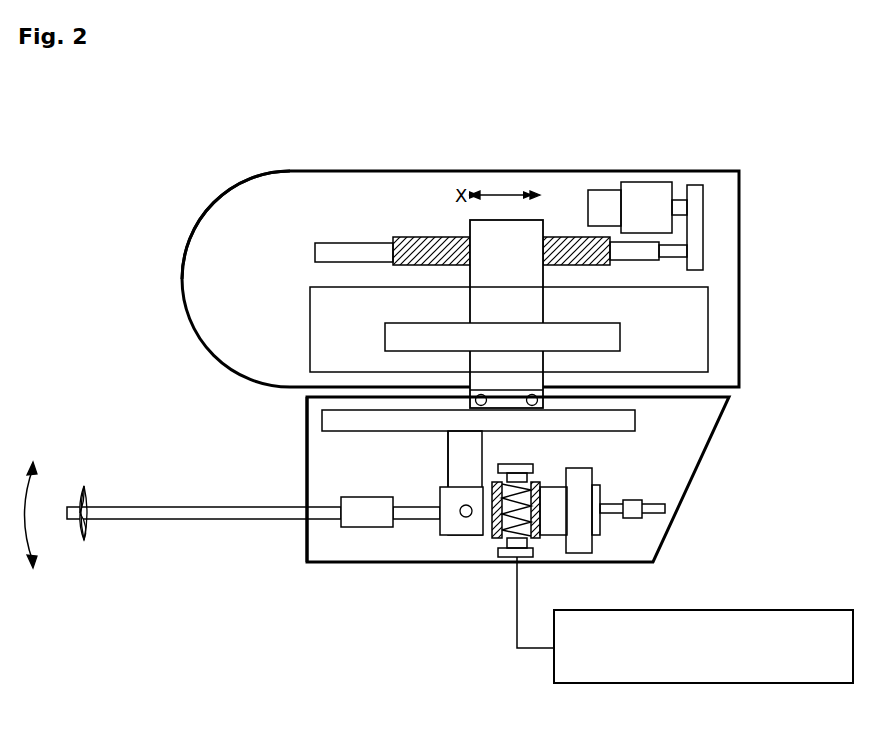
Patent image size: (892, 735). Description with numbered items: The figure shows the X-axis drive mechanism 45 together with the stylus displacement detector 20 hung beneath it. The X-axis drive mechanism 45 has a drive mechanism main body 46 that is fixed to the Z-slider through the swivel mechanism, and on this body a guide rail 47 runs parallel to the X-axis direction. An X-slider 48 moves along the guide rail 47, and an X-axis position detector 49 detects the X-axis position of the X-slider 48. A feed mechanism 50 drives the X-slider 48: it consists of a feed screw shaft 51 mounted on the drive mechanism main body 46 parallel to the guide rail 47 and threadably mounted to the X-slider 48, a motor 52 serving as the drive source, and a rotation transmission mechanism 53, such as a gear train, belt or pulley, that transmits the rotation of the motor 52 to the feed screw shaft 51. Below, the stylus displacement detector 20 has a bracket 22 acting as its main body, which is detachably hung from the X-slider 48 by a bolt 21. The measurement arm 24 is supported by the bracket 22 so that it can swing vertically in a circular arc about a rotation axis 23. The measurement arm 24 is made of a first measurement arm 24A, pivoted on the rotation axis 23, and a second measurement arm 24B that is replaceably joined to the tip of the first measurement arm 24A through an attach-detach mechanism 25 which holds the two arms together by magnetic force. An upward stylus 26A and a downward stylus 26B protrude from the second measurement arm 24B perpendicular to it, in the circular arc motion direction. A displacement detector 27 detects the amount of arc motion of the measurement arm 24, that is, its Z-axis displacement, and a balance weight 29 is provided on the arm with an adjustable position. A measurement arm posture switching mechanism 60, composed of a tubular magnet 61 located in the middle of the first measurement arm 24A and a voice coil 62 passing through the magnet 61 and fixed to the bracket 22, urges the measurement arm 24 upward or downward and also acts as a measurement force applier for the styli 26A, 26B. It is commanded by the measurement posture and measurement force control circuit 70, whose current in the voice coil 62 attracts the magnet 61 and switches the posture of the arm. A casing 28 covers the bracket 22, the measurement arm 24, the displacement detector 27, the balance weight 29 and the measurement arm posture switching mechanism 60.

The stylus displacement detector 20 is at (307, 442).
The bolt 21 is at (532, 406).
The bracket 22 is at (635, 419).
The rotation axis 23 is at (466, 517).
The measurement arm 24 is at (277, 603).
The first measurement arm 24A is at (440, 587).
The second measurement arm 24B is at (250, 520).
The attach-detach mechanism 25 is at (368, 527).
The upward stylus 26A is at (84, 487).
The downward stylus 26B is at (85, 544).
The displacement detector 27 is at (590, 545).
The casing 28 is at (697, 475).
The balance weight 29 is at (632, 500).
The X-axis drive mechanism 45 is at (350, 171).
The drive mechanism main body 46 is at (230, 190).
The guide rail 47 is at (310, 317).
The X-slider 48 is at (543, 305).
The X-axis position detector 49 is at (385, 337).
The feed mechanism 50 is at (548, 117).
The feed screw shaft 51 is at (572, 237).
The motor 52 is at (642, 190).
The rotation transmission mechanism 53 is at (693, 188).
The measurement arm posture switching mechanism 60 is at (530, 537).
The magnet 61 is at (545, 537).
The voice coil 62 is at (517, 540).
The measurement posture and measurement force control circuit 70 is at (670, 683).